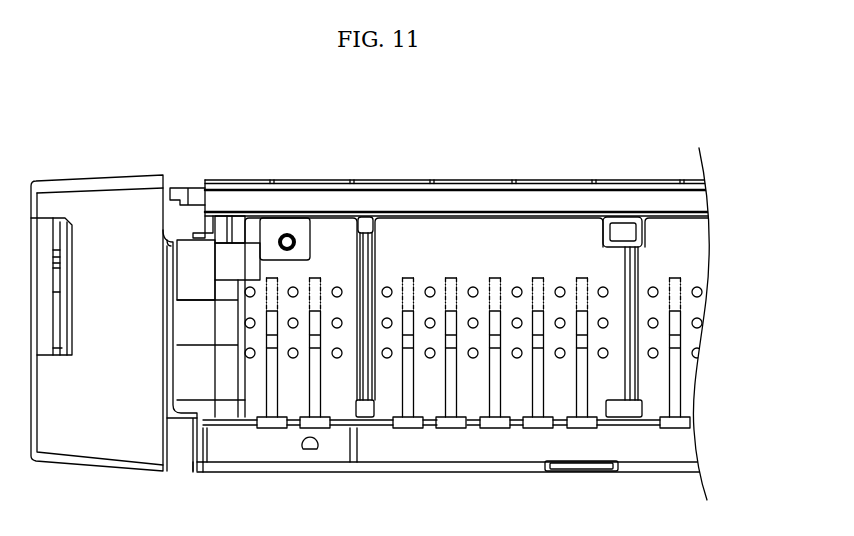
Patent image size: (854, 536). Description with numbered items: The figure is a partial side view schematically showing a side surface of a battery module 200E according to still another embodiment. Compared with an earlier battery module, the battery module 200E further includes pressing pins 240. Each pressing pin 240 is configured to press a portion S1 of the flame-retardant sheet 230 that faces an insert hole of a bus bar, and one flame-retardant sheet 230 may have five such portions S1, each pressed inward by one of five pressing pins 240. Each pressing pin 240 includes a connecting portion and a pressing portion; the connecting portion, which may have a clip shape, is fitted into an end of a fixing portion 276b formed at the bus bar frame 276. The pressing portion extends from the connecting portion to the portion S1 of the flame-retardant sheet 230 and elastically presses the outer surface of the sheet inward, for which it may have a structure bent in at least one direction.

The battery module 200E is at (143, 107).
The bus bar frame 276 is at (226, 172).
The portion of the flame-retardant sheet S1 is at (267, 278).
The flame-retardant sheet 230 is at (327, 238).
The pressing pin 240 is at (272, 405).
The fixing portion 276b is at (293, 430).